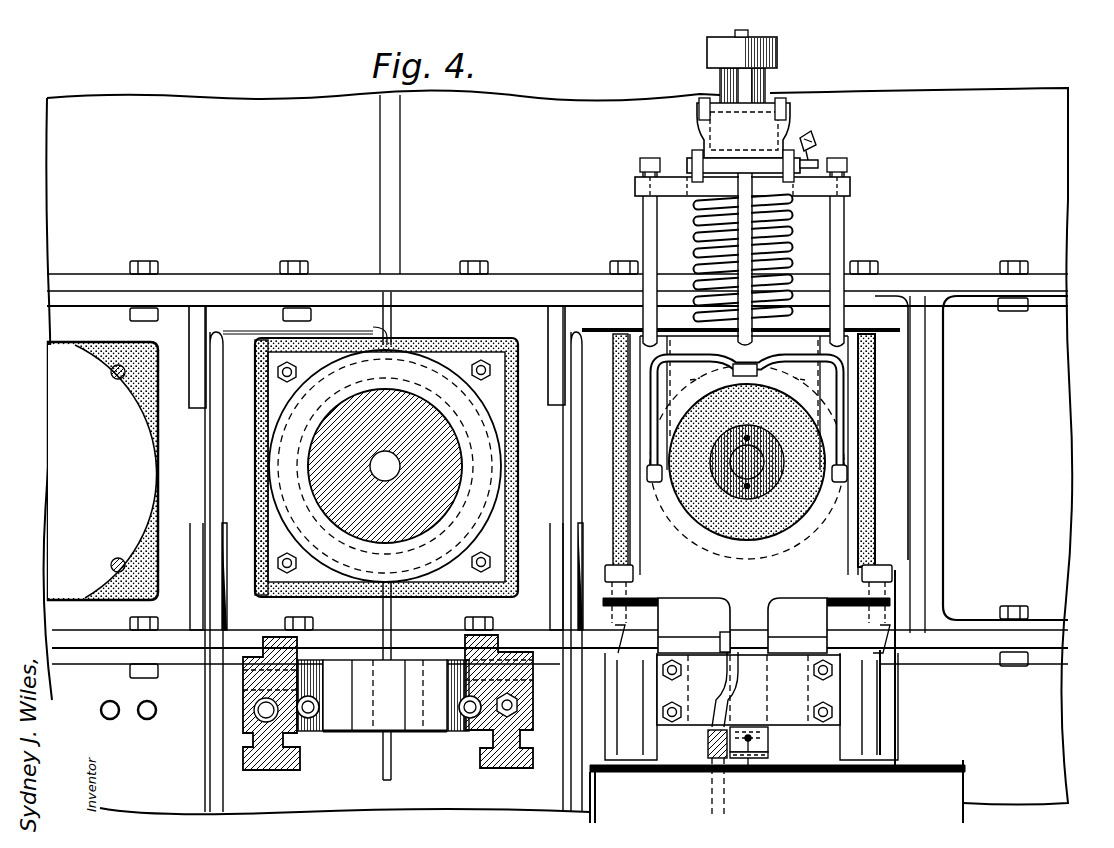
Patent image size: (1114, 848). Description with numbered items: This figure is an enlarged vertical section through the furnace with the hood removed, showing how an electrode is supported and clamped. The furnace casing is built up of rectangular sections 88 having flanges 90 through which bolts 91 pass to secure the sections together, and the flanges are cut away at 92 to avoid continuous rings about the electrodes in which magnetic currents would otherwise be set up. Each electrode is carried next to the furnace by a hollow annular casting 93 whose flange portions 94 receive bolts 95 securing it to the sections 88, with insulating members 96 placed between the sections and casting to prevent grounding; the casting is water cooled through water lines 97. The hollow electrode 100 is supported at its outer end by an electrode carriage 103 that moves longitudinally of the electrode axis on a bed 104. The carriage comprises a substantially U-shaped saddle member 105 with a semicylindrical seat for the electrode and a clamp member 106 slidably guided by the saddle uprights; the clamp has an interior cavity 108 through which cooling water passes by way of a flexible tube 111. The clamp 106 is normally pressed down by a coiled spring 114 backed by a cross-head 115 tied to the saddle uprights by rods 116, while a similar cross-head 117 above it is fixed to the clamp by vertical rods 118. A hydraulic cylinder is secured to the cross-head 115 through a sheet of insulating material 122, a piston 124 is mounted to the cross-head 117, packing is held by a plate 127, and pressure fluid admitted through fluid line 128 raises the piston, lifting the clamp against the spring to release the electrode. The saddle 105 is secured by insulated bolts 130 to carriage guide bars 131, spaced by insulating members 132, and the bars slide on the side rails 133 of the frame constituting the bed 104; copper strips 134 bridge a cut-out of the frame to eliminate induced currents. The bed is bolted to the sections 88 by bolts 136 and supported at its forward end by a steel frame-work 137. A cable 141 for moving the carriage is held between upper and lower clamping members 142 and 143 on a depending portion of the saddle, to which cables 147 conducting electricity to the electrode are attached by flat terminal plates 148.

The casing section 88 is at (47, 274).
The flange 90 is at (216, 305).
The bolt 91 is at (305, 300).
The cut away portion 92 is at (197, 410).
The hollow annular casting 93 is at (288, 457).
The flange portion 94 is at (278, 400).
The bolt 95 is at (280, 375).
The insulating member 96 is at (258, 508).
The water line 97 is at (210, 461).
The hollow electrode 100 is at (385, 532).
The electrode carriage 103 is at (851, 523).
The carriage bed 104 is at (235, 699).
The saddle member 105 is at (747, 477).
The clamp member 106 is at (753, 426).
The interior cavity 108 is at (692, 380).
The water tube 111 is at (648, 414).
The coiled spring 114 is at (760, 222).
The cross-head 115 is at (860, 191).
The rod 116 is at (643, 230).
The cross-head 117 is at (778, 50).
The vertical rod 118 is at (742, 118).
The sheet of insulating material 122 is at (687, 177).
The piston 124 is at (767, 80).
The plate 127 is at (790, 108).
The fluid line 128 is at (809, 163).
The insulated bolt 130 is at (633, 573).
The carriage guide bar 131 is at (643, 617).
The insulating member 132 is at (650, 600).
The side rail 133 is at (522, 690).
The copper strip 134 is at (748, 690).
The bolt 136 is at (310, 720).
The steel frame-work 137 is at (930, 774).
The cable 141 is at (749, 745).
The upper clamping member 142 is at (768, 732).
The lower clamping member 143 is at (762, 755).
The cable 147 is at (710, 748).
The flat terminal plate 148 is at (725, 655).